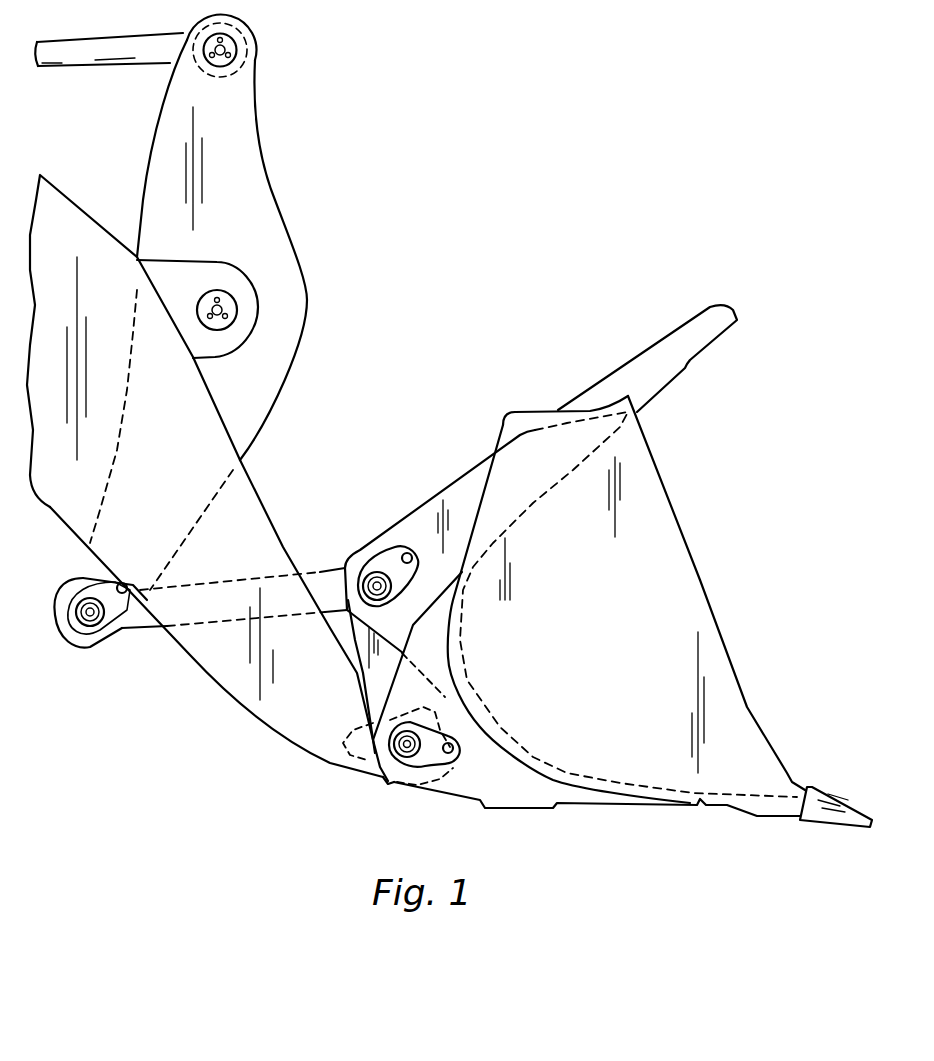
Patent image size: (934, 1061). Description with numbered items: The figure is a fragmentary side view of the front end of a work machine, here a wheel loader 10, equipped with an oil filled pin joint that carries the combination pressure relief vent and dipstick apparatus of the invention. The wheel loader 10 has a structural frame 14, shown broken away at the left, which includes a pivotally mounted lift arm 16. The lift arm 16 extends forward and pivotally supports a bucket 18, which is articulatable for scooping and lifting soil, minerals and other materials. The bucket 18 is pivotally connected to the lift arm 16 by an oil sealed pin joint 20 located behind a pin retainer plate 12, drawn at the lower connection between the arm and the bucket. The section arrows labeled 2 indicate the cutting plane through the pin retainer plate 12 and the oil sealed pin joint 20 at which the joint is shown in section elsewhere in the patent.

The wheel loader 10 is at (132, 772).
The pin retainer plate 12 is at (460, 737).
The structural frame 14 is at (50, 505).
The lift arm 16 is at (193, 657).
The bucket 18 is at (612, 366).
The oil sealed pin joint 20 is at (385, 765).
The section line 2- 2 is at (428, 683).